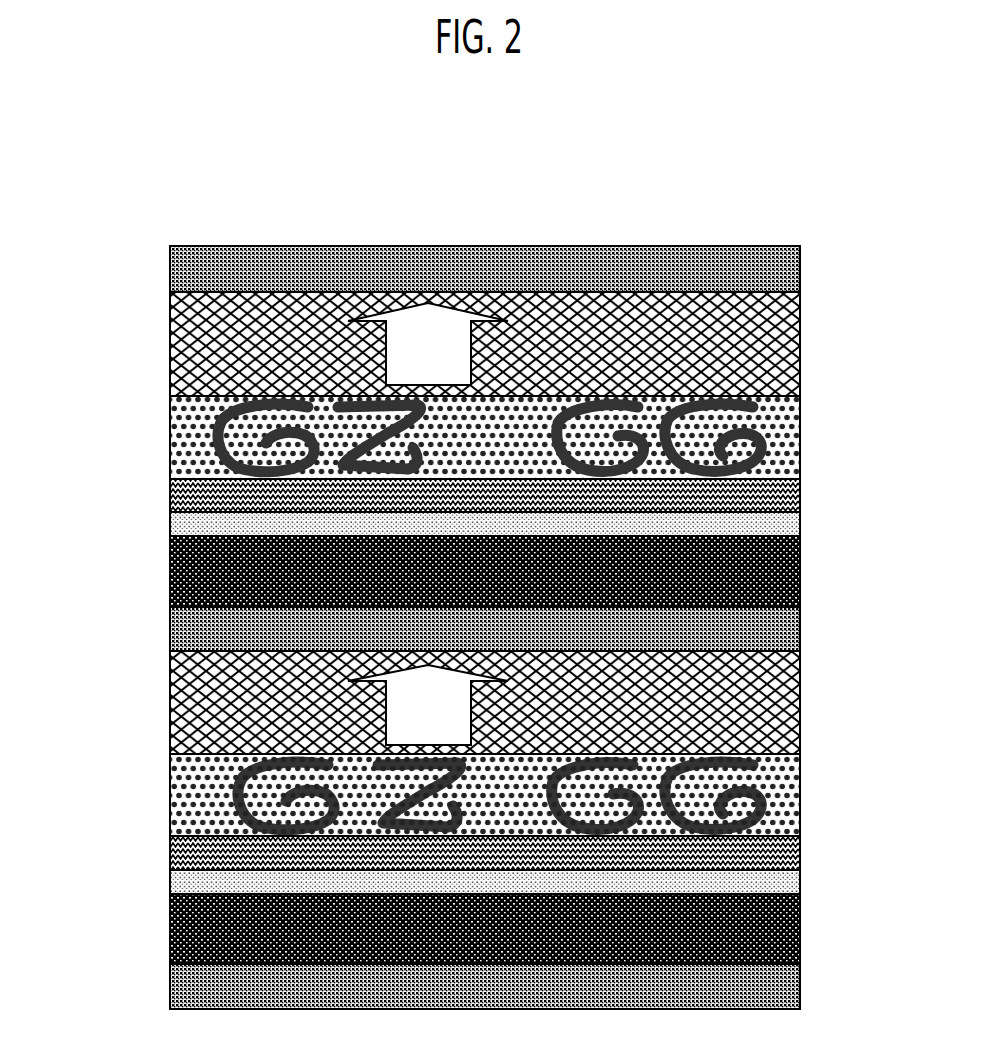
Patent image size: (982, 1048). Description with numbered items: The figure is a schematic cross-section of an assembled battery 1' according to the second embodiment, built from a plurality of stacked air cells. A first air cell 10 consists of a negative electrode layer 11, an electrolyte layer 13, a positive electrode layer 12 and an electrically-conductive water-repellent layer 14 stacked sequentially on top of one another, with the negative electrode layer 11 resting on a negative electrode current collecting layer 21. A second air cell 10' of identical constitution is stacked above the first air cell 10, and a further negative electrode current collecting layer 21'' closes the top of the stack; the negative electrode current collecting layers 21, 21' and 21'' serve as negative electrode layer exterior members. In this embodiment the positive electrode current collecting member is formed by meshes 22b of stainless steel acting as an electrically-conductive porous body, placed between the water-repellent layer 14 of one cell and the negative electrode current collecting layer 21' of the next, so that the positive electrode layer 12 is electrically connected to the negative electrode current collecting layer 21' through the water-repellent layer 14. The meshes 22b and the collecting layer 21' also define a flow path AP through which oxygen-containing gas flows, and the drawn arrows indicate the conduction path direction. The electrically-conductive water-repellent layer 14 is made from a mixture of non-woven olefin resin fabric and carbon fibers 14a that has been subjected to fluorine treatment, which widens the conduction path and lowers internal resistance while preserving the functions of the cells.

The assembled battery 1' is at (478, 562).
The negative electrode current collecting layer 21'' is at (442, 269).
The meshes 22b is at (471, 523).
The flow path AP is at (798, 287).
The second air cell 10' is at (448, 501).
The carbon fibers 14a is at (792, 413).
The negative electrode current collecting layer 21' is at (446, 629).
The first air cell 10 is at (416, 859).
The electrically-conductive water-repellent layer 14 is at (162, 780).
The positive electrode layer 12 is at (162, 840).
The electrolyte layer 13 is at (162, 872).
The negative electrode layer 11 is at (447, 929).
The negative electrode current collecting layer 21 is at (447, 986).